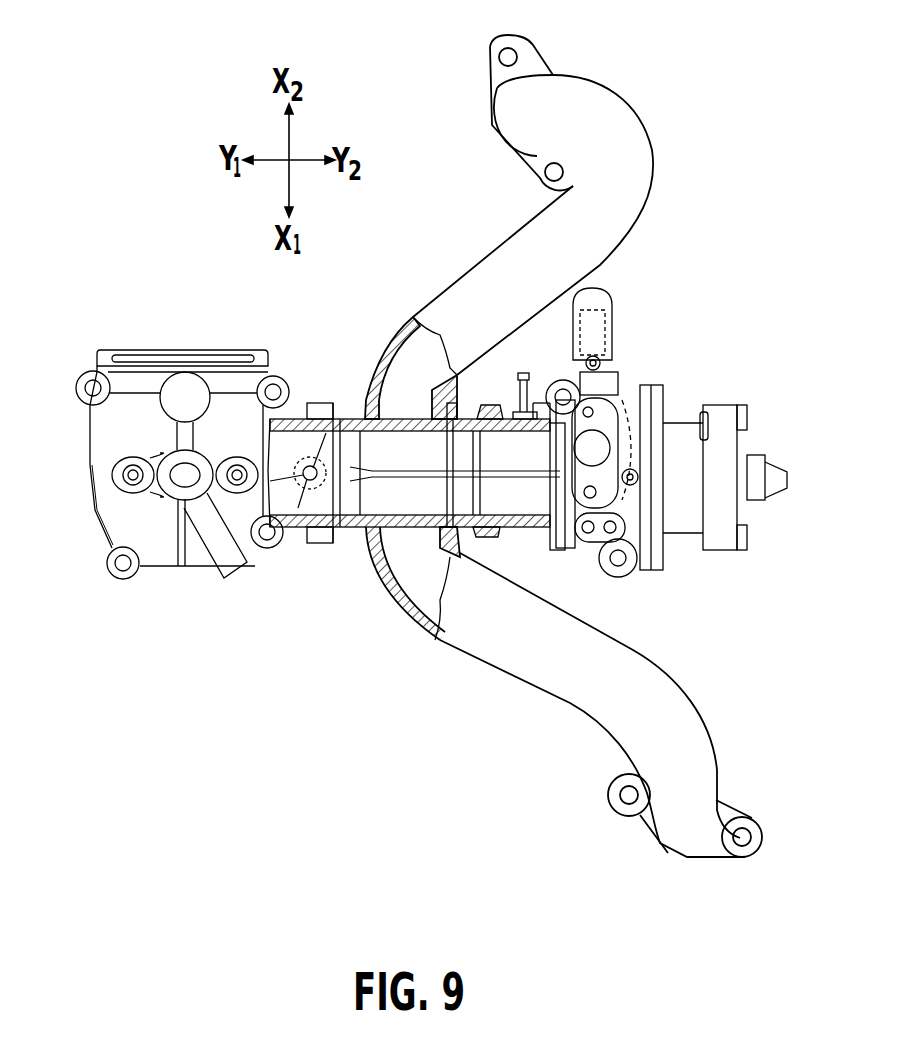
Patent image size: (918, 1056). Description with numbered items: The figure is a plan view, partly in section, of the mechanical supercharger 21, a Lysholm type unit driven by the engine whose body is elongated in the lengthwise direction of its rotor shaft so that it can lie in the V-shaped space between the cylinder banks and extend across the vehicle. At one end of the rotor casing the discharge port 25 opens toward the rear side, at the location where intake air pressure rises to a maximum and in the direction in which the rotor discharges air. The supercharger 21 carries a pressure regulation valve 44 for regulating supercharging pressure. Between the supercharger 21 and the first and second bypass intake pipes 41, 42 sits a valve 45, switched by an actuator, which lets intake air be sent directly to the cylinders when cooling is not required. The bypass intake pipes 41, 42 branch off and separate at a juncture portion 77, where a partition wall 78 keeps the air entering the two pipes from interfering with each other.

The mechanical supercharger 21 is at (347, 399).
The discharge port 25 is at (252, 351).
The first bypass intake pipe 41 is at (573, 690).
The second bypass intake pipe 42 is at (628, 224).
The pressure regulation valve 44 is at (623, 413).
The valve 45 is at (308, 540).
The juncture portion 77 is at (410, 515).
The partition wall 78 is at (502, 480).